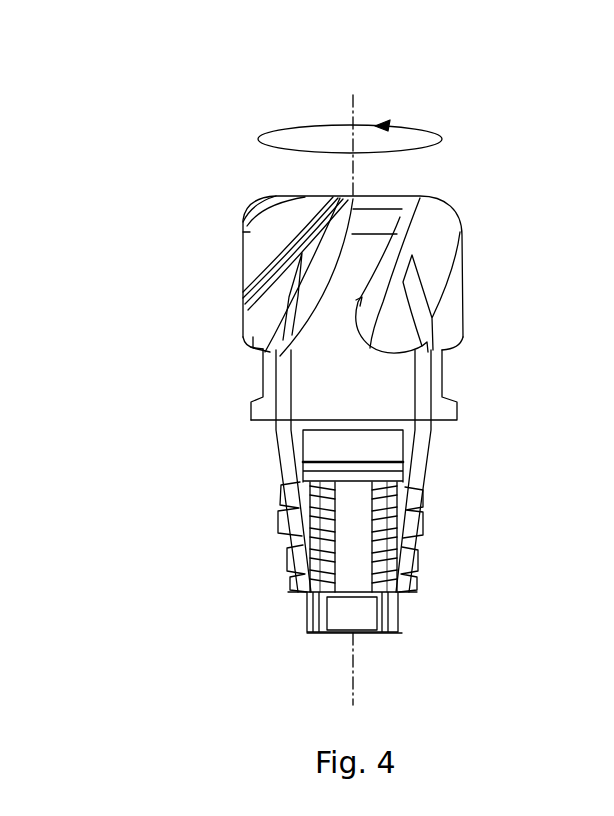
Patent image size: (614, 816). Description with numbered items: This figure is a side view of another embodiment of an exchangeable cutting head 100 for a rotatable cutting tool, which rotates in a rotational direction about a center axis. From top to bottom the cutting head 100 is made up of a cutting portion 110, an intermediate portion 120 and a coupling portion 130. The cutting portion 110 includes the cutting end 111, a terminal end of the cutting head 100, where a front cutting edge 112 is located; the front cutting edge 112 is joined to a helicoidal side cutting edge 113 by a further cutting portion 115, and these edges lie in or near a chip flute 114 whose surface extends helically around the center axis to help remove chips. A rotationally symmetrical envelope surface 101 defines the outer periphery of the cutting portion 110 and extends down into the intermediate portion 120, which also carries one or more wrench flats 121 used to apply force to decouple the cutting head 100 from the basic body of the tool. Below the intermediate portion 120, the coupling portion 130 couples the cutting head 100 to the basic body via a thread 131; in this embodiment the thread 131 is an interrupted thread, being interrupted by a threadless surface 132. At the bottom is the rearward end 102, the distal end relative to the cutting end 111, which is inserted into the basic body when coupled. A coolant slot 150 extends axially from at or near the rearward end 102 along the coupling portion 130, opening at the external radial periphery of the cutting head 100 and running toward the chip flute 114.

The cutting head 100 is at (183, 88).
The envelope surface 101 is at (303, 345).
The rearward end 102 is at (362, 635).
The cutting portion 110 is at (473, 195).
The cutting end 111 is at (363, 192).
The front cutting edge 112 is at (276, 202).
The side cutting edge 113 is at (243, 257).
The chip flute 114 is at (428, 220).
The further cutting portion 115 is at (244, 220).
The intermediate portion 120 is at (484, 348).
The wrench flat 121 is at (263, 378).
The coupling portion 130 is at (470, 482).
The thread 131 is at (283, 553).
The threadless surface 132 is at (348, 577).
The coolant slot 150 is at (296, 445).